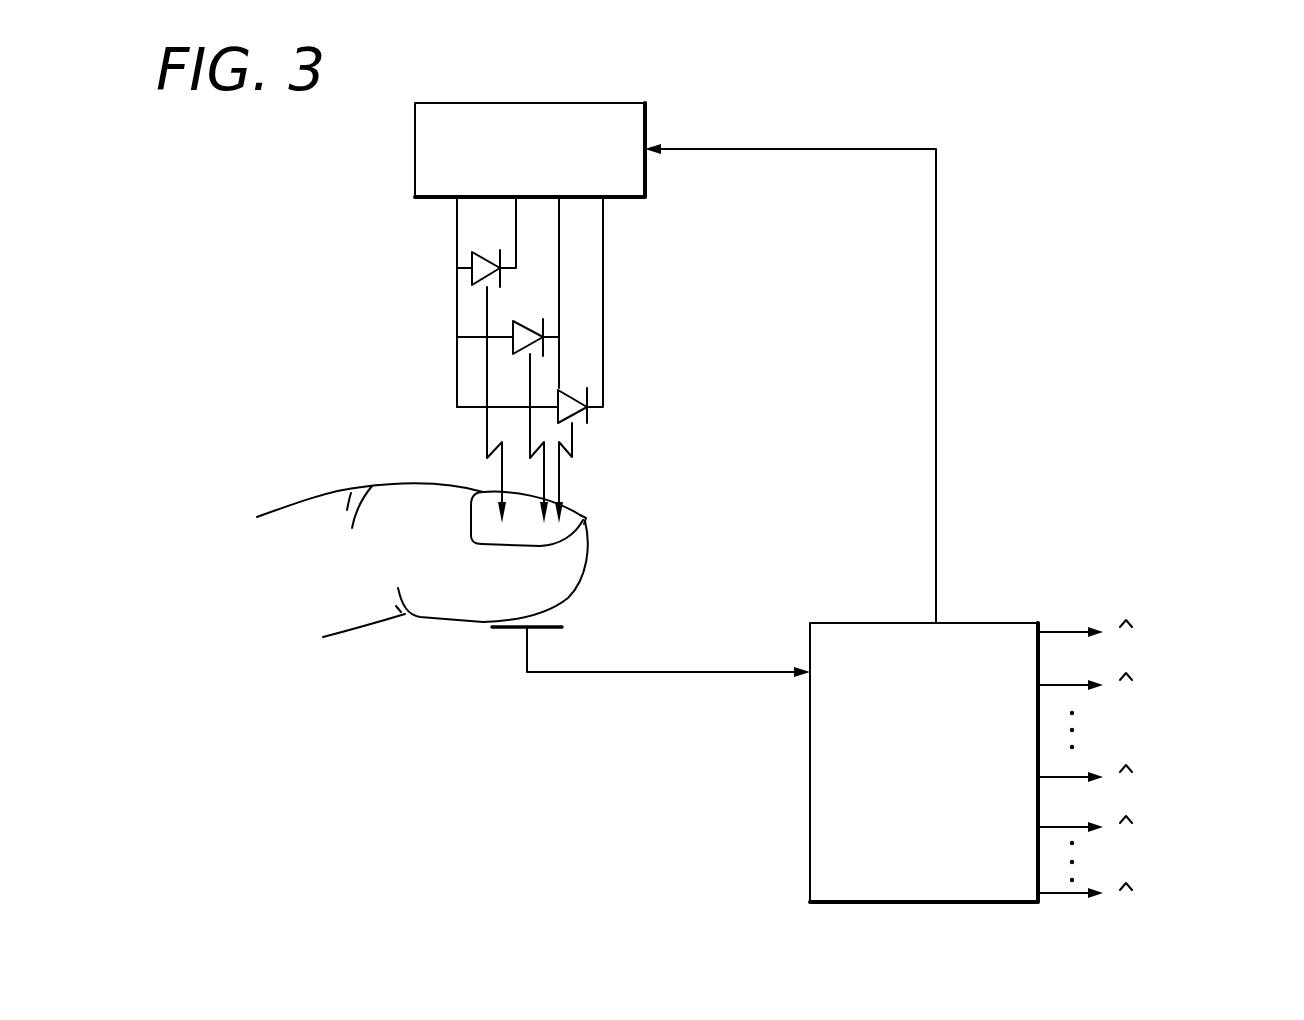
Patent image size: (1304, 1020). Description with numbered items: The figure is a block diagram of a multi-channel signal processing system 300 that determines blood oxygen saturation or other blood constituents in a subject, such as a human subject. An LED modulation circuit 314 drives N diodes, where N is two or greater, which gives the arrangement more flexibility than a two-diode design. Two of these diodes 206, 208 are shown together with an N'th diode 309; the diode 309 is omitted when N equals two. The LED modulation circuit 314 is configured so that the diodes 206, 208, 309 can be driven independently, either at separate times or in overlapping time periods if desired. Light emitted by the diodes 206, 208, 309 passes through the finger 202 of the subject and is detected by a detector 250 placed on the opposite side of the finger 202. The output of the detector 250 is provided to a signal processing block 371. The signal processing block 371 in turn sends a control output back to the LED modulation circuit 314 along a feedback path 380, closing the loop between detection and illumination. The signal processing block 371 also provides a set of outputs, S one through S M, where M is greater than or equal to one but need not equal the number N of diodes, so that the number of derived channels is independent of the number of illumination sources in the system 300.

The multi-channel signal processing system 300 is at (1208, 302).
The LED modulation circuit 314 is at (594, 103).
The diode 206 is at (471, 274).
The diode 208 is at (530, 327).
The N'th diode 309 is at (575, 423).
The finger 202 is at (370, 483).
The detector 250 is at (508, 637).
The signal processing block 371 is at (988, 622).
The feedback / control line 380 is at (937, 388).